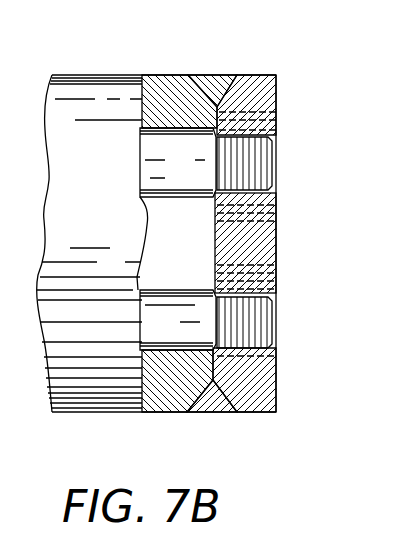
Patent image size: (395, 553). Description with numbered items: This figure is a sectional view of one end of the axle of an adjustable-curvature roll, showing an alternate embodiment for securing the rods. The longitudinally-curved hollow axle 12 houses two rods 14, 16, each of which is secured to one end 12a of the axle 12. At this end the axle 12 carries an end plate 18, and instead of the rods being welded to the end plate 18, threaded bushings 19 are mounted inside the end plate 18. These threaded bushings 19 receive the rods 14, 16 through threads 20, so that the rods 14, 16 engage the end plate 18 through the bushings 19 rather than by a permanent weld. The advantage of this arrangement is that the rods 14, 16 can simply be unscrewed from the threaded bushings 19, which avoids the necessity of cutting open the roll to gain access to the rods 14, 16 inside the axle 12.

The axle 12 is at (189, 96).
The end of the axle 12a is at (280, 108).
The rod 14 is at (192, 180).
The rod 16 is at (167, 325).
The end plate 18 is at (265, 248).
The threaded bushings 19 is at (278, 210).
The threads 20 is at (270, 368).